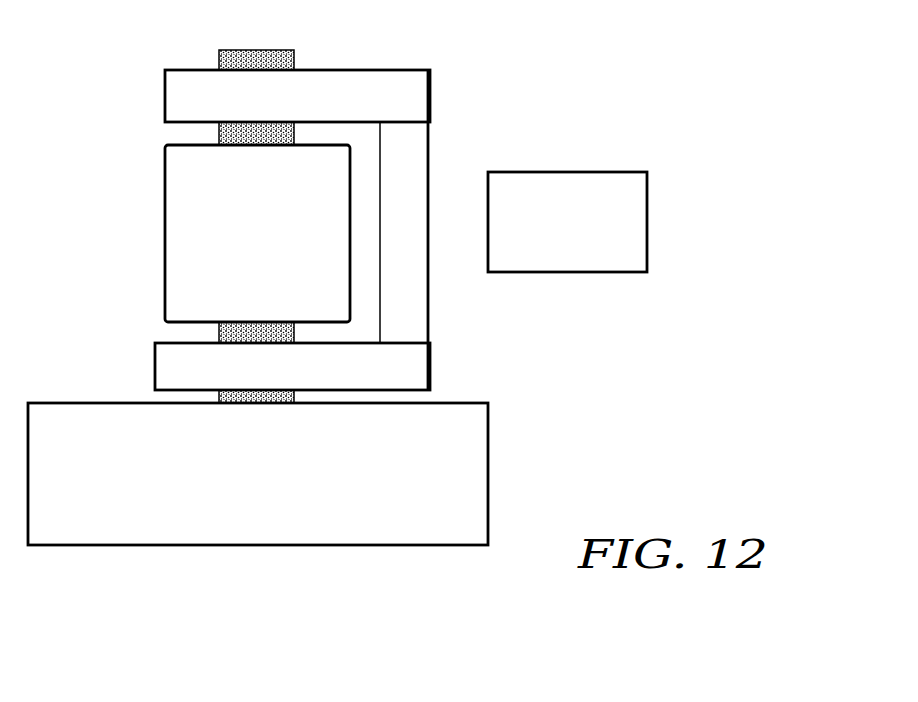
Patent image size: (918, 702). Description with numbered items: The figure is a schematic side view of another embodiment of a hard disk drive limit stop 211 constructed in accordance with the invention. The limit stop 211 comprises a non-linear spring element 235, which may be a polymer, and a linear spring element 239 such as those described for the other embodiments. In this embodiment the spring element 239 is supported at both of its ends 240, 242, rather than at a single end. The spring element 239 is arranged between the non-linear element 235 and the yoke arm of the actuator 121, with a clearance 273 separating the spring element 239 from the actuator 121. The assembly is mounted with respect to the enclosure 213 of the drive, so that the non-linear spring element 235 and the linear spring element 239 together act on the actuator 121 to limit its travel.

The limit stop 211 is at (613, 41).
The end 240 is at (181, 100).
The spring element 239 is at (357, 69).
The clearance 273 is at (370, 293).
The non-linear spring element 235 is at (247, 50).
The end 242 is at (168, 372).
The enclosure 213 is at (215, 547).
The actuator 121 is at (578, 172).